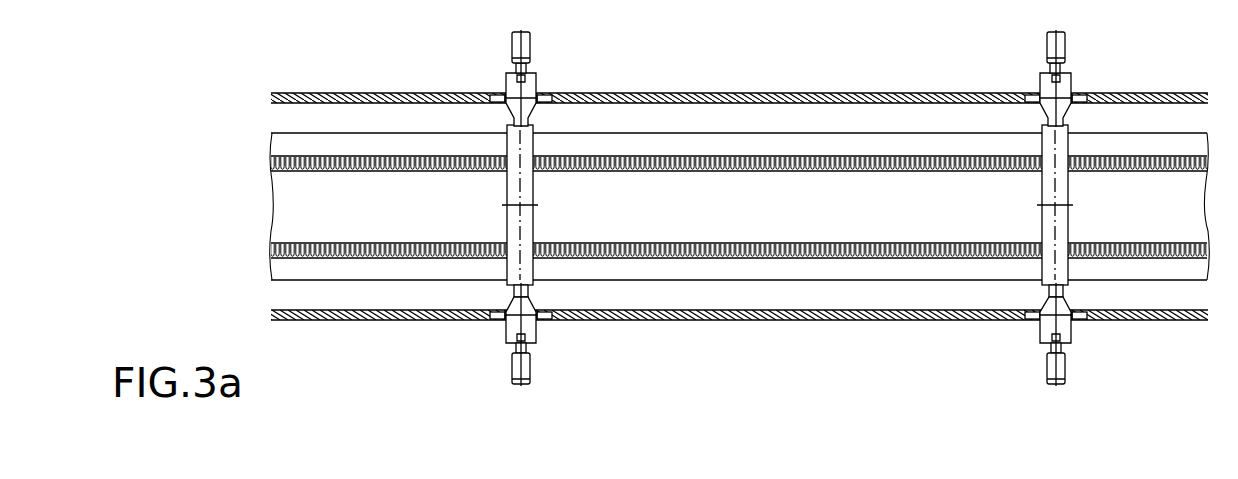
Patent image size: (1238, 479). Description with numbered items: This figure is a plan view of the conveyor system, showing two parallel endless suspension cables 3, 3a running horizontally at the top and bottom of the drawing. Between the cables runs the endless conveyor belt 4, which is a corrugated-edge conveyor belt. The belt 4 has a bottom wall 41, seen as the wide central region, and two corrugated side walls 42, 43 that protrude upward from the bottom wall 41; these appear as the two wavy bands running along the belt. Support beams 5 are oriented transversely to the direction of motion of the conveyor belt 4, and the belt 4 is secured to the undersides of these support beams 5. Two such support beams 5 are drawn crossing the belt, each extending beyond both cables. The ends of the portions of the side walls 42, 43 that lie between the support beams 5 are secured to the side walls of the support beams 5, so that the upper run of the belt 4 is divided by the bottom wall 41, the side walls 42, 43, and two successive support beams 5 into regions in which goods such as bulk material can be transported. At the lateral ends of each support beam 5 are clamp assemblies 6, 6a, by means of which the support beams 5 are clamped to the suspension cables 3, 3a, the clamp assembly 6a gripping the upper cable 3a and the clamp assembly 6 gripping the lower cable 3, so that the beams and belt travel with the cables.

The suspension cable 3 is at (423, 319).
The suspension cable 3a is at (412, 94).
The conveyor belt 4 is at (919, 131).
The bottom wall 41 is at (465, 223).
The corrugated side wall 42 is at (354, 259).
The corrugated side wall 43 is at (337, 156).
The support beam 5 is at (529, 225).
The clamp assembly 6 is at (529, 374).
The clamp assembly 6a is at (531, 49).